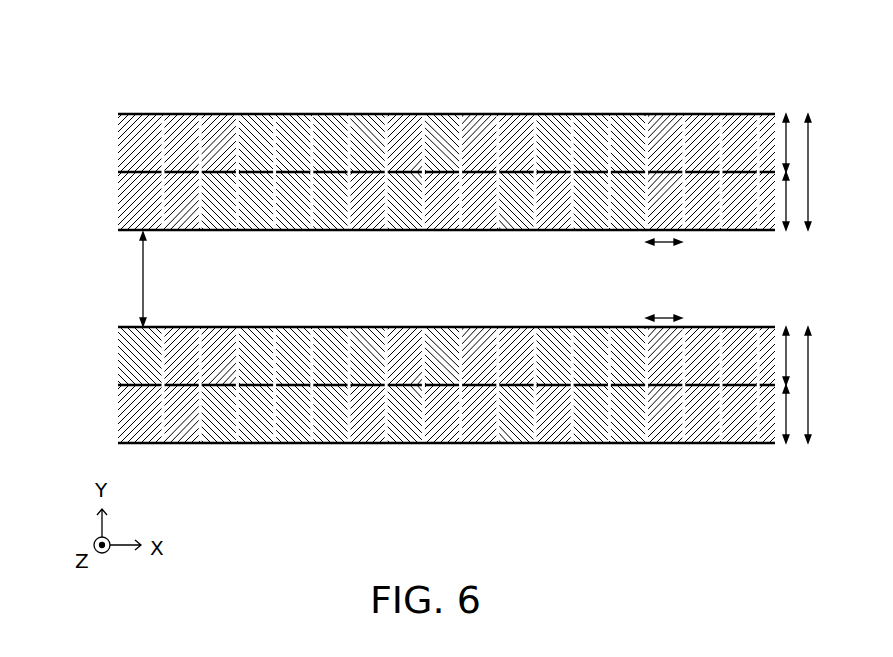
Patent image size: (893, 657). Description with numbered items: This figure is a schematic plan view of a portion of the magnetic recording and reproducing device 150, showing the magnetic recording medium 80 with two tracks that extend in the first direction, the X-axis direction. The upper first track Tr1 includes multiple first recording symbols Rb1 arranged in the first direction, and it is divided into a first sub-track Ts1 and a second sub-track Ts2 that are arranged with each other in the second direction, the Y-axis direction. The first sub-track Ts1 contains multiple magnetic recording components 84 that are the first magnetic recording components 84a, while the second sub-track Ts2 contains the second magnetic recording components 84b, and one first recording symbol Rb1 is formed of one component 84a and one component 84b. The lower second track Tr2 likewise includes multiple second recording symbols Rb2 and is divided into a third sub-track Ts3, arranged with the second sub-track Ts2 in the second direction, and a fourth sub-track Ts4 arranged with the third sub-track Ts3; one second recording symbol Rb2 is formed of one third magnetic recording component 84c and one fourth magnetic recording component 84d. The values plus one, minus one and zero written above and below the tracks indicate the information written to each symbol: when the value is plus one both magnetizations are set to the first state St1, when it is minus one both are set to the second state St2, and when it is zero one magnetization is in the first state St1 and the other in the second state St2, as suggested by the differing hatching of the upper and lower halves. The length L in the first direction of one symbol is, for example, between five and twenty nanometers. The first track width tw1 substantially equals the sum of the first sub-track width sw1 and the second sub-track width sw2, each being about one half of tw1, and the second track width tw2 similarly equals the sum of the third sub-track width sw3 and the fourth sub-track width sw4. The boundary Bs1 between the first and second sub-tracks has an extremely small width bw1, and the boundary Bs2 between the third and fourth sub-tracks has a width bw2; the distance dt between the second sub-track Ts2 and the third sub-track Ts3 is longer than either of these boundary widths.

The magnetic recording and reproducing device 150 is at (722, 46).
The magnetic recording medium 80 is at (173, 73).
The magnetic recording components 84 is at (216, 140).
The first magnetic recording components 84a is at (477, 165).
The second magnetic recording components 84b is at (478, 212).
The third magnetic recording components 84c is at (512, 377).
The fourth magnetic recording components 84d is at (520, 430).
The first state St1 is at (133, 150).
The second state St2 is at (243, 150).
The first track Tr1 is at (70, 135).
The second track Tr2 is at (70, 350).
The first sub-track Ts1 is at (120, 156).
The second sub-track Ts2 is at (120, 199).
The third sub-track Ts3 is at (120, 371).
The fourth sub-track Ts4 is at (120, 414).
The boundary Bs1 is at (292, 174).
The boundary Bs2 is at (290, 388).
The first recording symbols Rb1 is at (428, 270).
The second recording symbols Rb2 is at (483, 523).
The first sub-track width sw1 is at (781, 112).
The second sub-track width sw2 is at (786, 231).
The third sub-track width sw3 is at (781, 327).
The fourth sub-track width sw4 is at (786, 445).
The width of boundary bw1 is at (786, 172).
The width of boundary bw2 is at (786, 385).
The first track width tw1 is at (808, 232).
The second track width tw2 is at (808, 446).
The distance dt is at (132, 279).
The length L is at (661, 244).